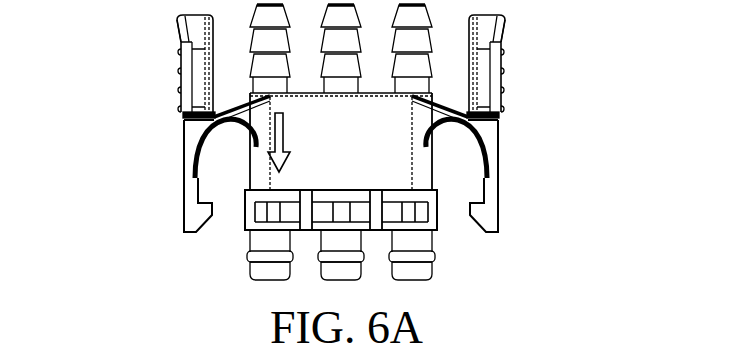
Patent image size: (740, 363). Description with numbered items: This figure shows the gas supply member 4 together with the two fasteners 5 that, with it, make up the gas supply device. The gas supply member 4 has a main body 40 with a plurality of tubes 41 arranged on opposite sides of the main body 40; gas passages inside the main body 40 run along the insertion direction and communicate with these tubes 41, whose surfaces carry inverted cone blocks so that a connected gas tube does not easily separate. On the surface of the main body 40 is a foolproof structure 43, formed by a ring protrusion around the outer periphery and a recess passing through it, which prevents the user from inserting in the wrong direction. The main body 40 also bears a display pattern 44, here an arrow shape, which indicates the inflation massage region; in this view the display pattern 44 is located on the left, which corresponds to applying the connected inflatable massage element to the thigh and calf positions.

The gas supply member 4 is at (478, 248).
The fastener 5 is at (146, 76).
The main body 40 is at (250, 172).
The tube 41 is at (432, 49).
The foolproof structure 43 is at (443, 212).
The display pattern 44 is at (272, 162).